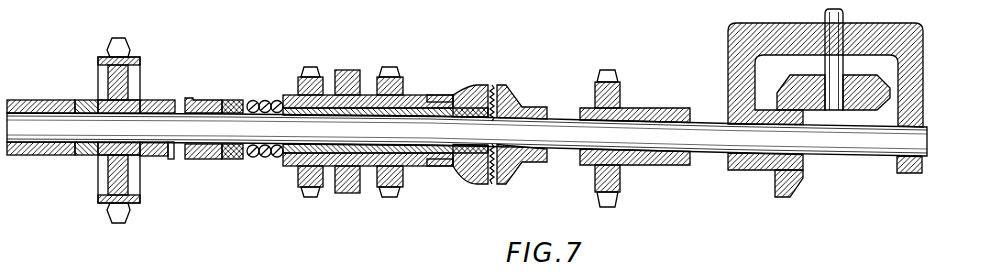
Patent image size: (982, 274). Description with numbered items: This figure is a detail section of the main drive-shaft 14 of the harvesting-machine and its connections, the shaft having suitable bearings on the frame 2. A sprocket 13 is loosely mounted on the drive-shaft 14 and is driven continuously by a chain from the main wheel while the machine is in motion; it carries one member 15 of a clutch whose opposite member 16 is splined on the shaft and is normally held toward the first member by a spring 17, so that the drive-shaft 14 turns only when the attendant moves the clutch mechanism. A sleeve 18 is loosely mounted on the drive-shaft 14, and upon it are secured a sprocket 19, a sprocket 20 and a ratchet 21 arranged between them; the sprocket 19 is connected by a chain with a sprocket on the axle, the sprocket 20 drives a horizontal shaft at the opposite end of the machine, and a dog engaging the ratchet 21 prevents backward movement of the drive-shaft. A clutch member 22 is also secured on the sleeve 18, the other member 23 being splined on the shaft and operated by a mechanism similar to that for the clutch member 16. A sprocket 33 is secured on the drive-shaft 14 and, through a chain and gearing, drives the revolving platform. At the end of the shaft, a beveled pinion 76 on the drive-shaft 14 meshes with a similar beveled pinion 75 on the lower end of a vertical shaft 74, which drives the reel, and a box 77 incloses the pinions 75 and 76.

The frame 2 is at (34, 152).
The sprocket 13 is at (108, 181).
The drive-shaft 14 is at (298, 133).
The clutch member 15 is at (164, 159).
The clutch member 16 is at (214, 160).
The spring 17 is at (257, 100).
The sleeve 18 is at (422, 170).
The sprocket 19 is at (312, 198).
The sprocket 20 is at (393, 198).
The ratchet 21 is at (350, 196).
The clutch member 22 is at (478, 177).
The clutch member 23 is at (516, 176).
The sprocket 33 is at (614, 190).
The vertical shaft 74 is at (838, 108).
The beveled pinion 75 is at (880, 97).
The beveled pinion 76 is at (794, 186).
The box 77 is at (923, 87).